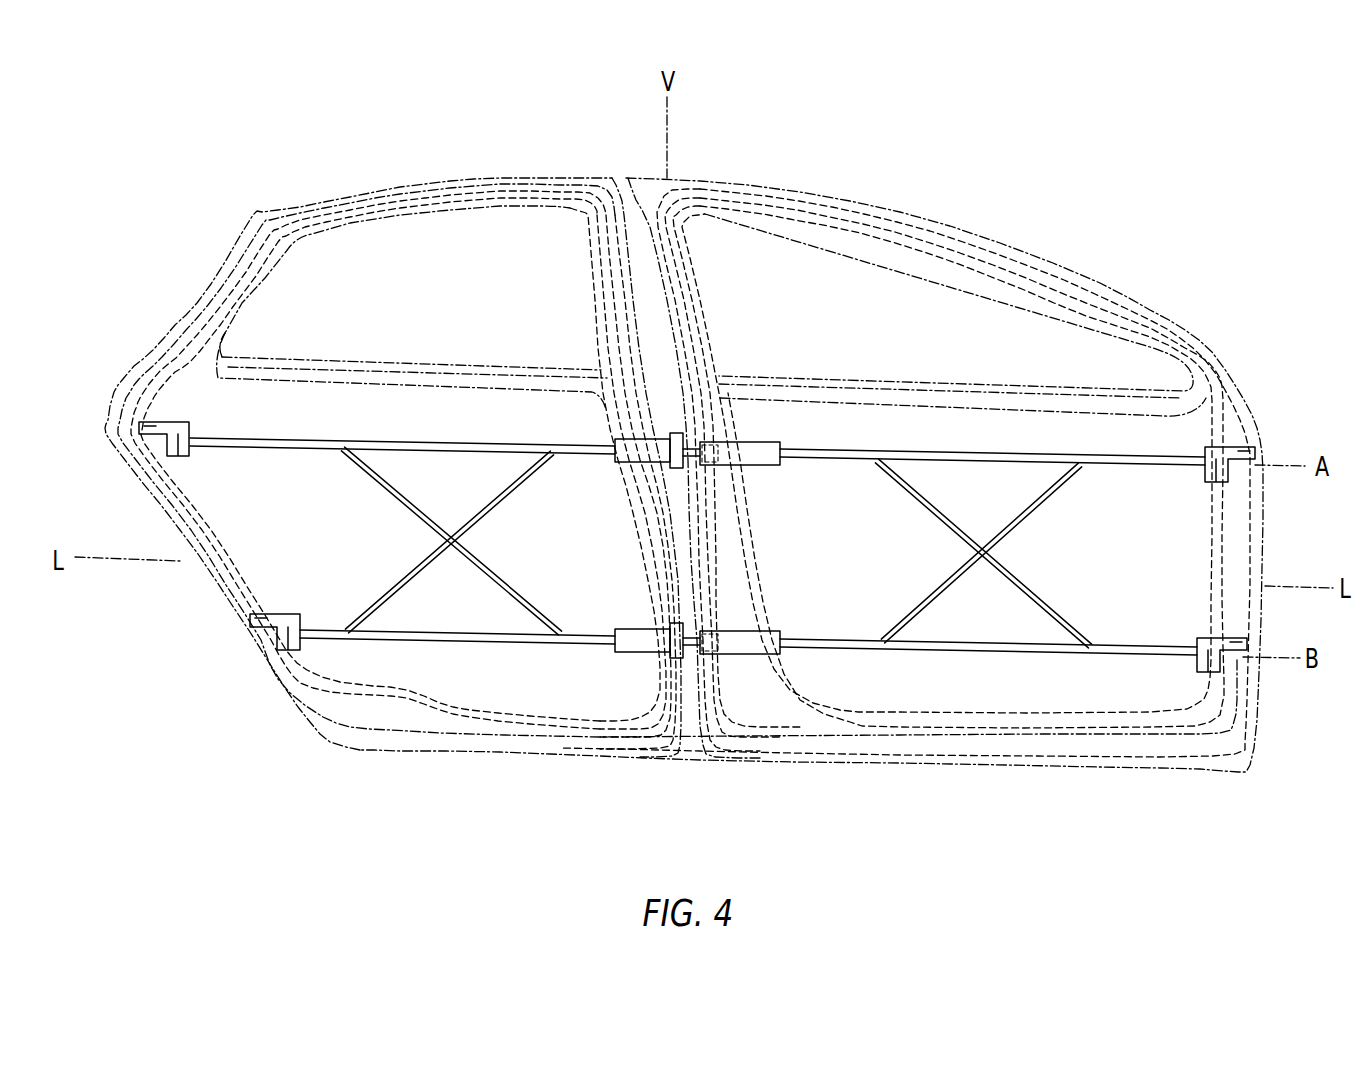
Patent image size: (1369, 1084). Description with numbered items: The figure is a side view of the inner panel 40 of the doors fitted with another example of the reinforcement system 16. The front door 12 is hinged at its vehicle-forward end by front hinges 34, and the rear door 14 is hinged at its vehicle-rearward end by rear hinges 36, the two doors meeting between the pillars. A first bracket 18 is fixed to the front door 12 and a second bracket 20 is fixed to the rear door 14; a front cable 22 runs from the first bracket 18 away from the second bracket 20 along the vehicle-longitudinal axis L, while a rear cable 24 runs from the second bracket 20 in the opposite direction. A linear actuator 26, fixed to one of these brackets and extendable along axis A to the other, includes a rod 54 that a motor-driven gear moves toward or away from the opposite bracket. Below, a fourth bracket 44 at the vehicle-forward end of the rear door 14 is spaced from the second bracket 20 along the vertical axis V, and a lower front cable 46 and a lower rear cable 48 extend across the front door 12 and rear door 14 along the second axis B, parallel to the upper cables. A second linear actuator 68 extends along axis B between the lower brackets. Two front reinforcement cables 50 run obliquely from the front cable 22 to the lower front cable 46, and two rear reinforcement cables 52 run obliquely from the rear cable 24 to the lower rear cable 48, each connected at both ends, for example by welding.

The front door 12 is at (1207, 340).
The rear door 14 is at (170, 327).
The reinforcement system 16 is at (850, 412).
The first bracket 18 is at (760, 442).
The second bracket 20 is at (622, 462).
The front cable 22 is at (953, 449).
The rear cable 24 is at (412, 437).
The linear actuator 26 is at (675, 433).
The front hinges 34 is at (1233, 459).
The rear hinges 36 is at (159, 433).
The inner panel 40 is at (722, 750).
The fourth bracket 44 is at (623, 652).
The lower front cable 46 is at (980, 654).
The lower rear cable 48 is at (473, 643).
The front reinforcement cable 50 is at (1032, 588).
The rear reinforcement cable 52 is at (402, 578).
The rod 54 is at (693, 443).
The second linear actuator 68 is at (672, 623).